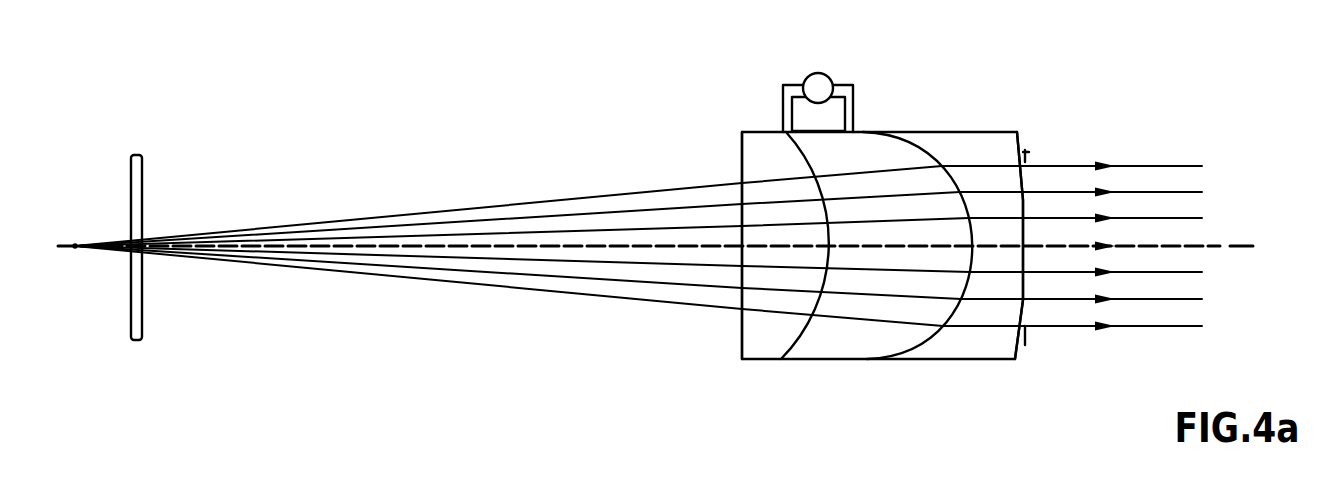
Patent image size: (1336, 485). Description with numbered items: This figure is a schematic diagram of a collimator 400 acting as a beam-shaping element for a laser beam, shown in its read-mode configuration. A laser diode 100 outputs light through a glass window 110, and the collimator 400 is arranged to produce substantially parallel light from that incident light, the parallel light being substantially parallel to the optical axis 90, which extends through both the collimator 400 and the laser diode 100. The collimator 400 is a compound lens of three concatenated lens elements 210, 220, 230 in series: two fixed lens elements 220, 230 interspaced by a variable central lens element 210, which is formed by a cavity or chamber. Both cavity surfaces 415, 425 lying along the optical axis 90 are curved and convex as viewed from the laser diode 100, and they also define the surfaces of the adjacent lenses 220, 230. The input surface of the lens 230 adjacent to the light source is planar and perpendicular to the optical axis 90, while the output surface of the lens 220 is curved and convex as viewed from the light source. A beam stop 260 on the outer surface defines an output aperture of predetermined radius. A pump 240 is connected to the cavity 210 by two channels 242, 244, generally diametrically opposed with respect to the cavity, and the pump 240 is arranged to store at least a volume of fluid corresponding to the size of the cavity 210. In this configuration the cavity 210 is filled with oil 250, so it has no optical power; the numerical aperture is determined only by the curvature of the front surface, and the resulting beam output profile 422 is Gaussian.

The optical axis 90 is at (1238, 247).
The laser diode 100 is at (63, 240).
The glass window 110 is at (143, 180).
The central lens element 210 is at (823, 343).
The lens element 220 is at (987, 340).
The lens element 230 is at (762, 343).
The pump 240 is at (832, 75).
The channel 242 is at (785, 112).
The channel 244 is at (855, 108).
The oil 250 is at (858, 167).
The beam stop 260 is at (1025, 152).
The collimator 400 is at (1020, 122).
The cavity surface 415 is at (917, 345).
The beam output profile 422 is at (1207, 177).
The cavity surface 425 is at (800, 152).